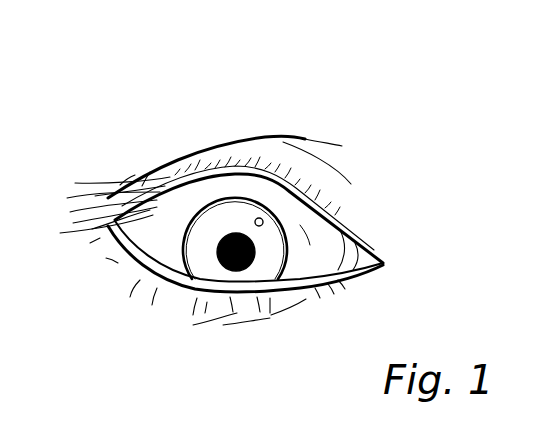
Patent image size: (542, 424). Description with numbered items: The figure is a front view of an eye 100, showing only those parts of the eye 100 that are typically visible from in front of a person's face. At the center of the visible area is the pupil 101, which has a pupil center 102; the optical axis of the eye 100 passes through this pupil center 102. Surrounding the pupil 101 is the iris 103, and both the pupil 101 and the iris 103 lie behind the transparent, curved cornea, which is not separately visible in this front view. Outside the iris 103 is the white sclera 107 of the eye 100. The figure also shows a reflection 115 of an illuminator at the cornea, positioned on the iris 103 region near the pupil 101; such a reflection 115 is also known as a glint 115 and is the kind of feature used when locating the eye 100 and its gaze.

The eye 100 is at (127, 123).
The pupil 101 is at (250, 263).
The pupil center 102 is at (240, 252).
The iris 103 is at (213, 227).
The sclera 107 is at (305, 243).
The reflection 115 is at (263, 221).